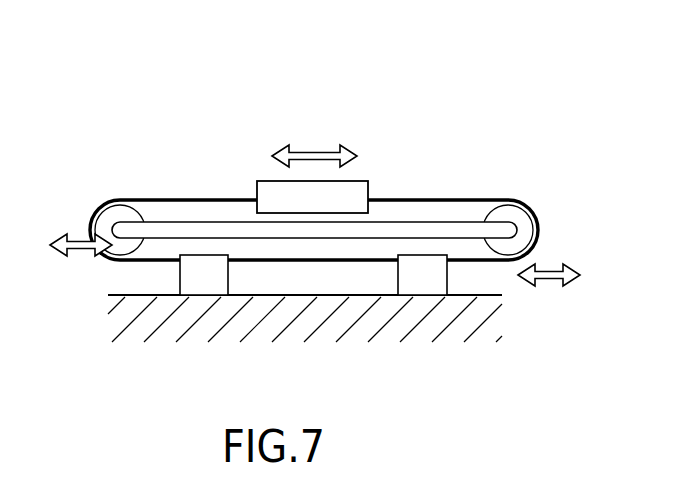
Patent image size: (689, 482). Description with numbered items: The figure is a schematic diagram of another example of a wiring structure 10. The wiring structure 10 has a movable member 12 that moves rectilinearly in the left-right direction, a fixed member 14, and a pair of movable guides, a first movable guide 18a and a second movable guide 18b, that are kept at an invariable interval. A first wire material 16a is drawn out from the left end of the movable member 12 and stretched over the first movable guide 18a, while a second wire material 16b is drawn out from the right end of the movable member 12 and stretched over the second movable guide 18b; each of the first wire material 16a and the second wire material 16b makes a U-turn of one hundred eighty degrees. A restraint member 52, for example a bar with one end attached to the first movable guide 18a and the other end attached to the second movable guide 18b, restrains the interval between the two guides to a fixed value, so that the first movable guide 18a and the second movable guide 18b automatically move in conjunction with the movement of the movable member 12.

The wiring structure 10 is at (263, 104).
The movable member 12 is at (313, 181).
The fixed member 14 is at (200, 282).
The first wire material 16a is at (176, 198).
The second wire material 16b is at (445, 198).
The first movable guide 18a is at (114, 212).
The second movable guide 18b is at (503, 212).
The restraint member 52 is at (377, 230).